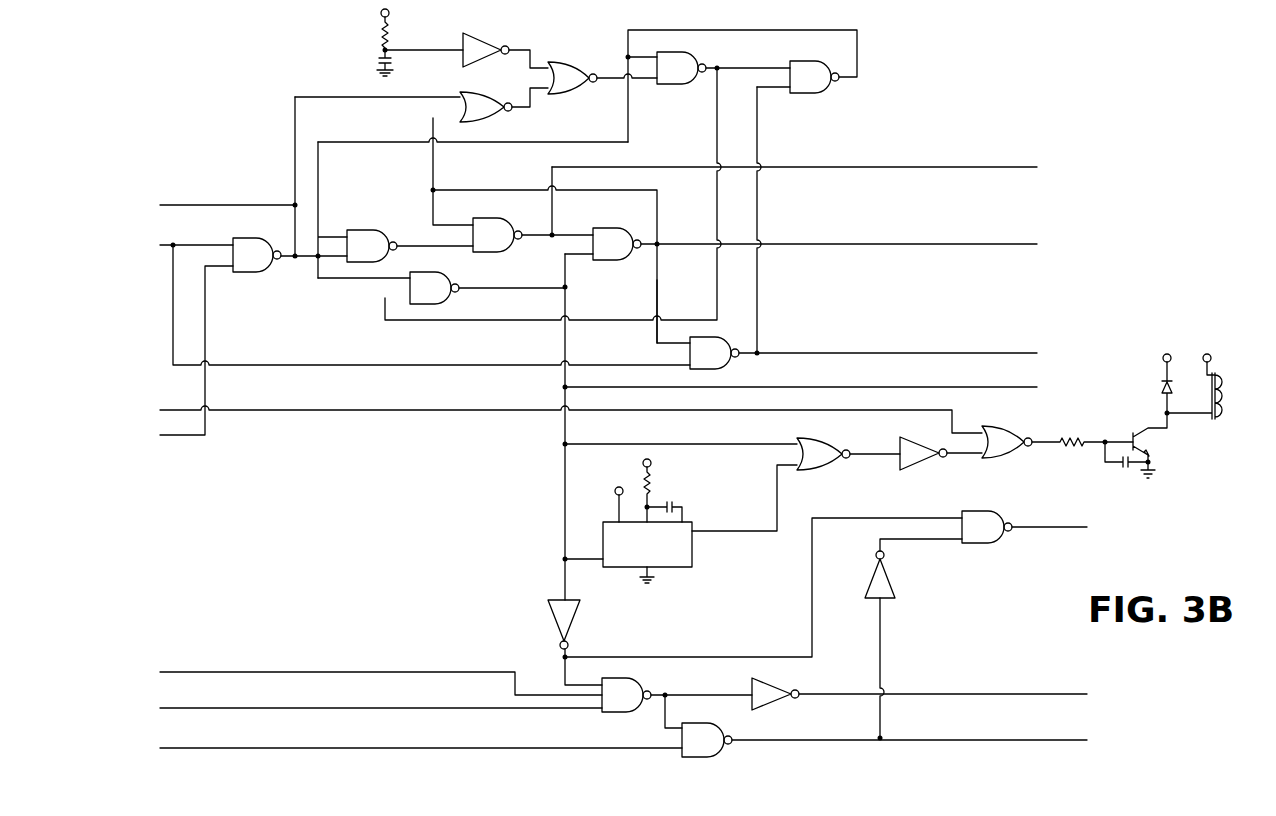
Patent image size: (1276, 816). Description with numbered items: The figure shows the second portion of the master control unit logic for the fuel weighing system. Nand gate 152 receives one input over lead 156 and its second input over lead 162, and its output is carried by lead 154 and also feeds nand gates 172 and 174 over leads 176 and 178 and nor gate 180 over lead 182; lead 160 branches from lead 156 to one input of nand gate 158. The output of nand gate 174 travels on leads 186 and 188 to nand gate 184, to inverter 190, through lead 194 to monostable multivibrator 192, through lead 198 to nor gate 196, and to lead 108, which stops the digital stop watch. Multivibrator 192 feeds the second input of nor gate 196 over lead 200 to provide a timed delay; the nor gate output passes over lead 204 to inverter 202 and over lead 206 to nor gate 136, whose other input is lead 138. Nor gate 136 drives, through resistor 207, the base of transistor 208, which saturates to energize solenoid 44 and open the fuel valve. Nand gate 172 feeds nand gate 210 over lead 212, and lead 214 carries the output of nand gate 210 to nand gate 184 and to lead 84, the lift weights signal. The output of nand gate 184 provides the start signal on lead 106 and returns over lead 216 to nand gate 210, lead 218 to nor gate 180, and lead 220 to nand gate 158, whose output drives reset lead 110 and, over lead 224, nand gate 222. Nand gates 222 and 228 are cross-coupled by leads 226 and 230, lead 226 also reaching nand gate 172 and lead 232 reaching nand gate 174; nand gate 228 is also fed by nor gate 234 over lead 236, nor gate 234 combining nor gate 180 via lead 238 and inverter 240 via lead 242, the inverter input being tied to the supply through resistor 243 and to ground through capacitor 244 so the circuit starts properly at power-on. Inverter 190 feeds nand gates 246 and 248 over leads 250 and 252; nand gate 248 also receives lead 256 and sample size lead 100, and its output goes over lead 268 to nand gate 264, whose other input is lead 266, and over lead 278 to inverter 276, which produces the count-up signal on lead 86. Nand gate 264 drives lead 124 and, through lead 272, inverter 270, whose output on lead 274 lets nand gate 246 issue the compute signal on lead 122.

The solenoid 44 is at (1223, 402).
The lead 84 is at (990, 167).
The lead 86 is at (1008, 694).
The sample size signal lead 100 is at (200, 665).
The lead 106 is at (970, 244).
The lead 108 is at (985, 380).
The lead 110 is at (971, 353).
The lead 122 is at (1055, 522).
The lead 124 is at (1018, 740).
The nor gate 136 is at (1027, 434).
The lead 138 is at (295, 410).
The nand gate 152 is at (260, 272).
The lead 154 is at (216, 205).
The lead 156 is at (208, 245).
The nand gate 158 is at (723, 360).
The lead 160 is at (340, 365).
The lead 162 is at (206, 341).
The nand gate 172 is at (373, 238).
The nand gate 174 is at (446, 285).
The lead 176 is at (330, 240).
The lead 178 is at (381, 281).
The nor gate 180 is at (485, 98).
The lead 182 is at (343, 98).
The nand gate 184 is at (618, 261).
The lead 186 is at (502, 291).
The lead 188 is at (566, 353).
The inverter 190 is at (571, 620).
The monostable multivibrator 192 is at (688, 557).
The lead 194 is at (593, 561).
The nor gate 196 is at (822, 451).
The lead 198 is at (670, 444).
The lead 200 is at (778, 502).
The inverter 202 is at (921, 459).
The lead 204 is at (866, 454).
The lead 206 is at (967, 454).
The resistor 207 is at (1071, 448).
The transistor 208 is at (1133, 435).
The nand gate 210 is at (511, 250).
The lead 212 is at (446, 249).
The lead 214 is at (570, 235).
The lead 216 is at (498, 190).
The lead 218 is at (436, 152).
The lead 220 is at (658, 303).
The nand gate 222 is at (818, 86).
The lead 224 is at (759, 300).
The lead 226 is at (700, 30).
The nand gate 228 is at (689, 60).
The lead 230 is at (750, 68).
The lead 232 is at (716, 127).
The nor gate 234 is at (573, 67).
The lead 236 is at (604, 82).
The lead 238 is at (531, 100).
The inverter 240 is at (479, 42).
The lead 242 is at (524, 50).
The resistor 243 is at (380, 40).
The capacitor 244 is at (380, 62).
The nand gate 246 is at (986, 544).
The nand gate 248 is at (632, 681).
The lead 250 is at (900, 518).
The lead 252 is at (561, 677).
The lead 256 is at (205, 700).
The nand gate 264 is at (714, 752).
The lead 266 is at (298, 740).
The lead 268 is at (663, 720).
The inverter 270 is at (892, 590).
The lead 272 is at (881, 651).
The lead 274 is at (928, 540).
The inverter 276 is at (783, 681).
The lead 278 is at (698, 695).